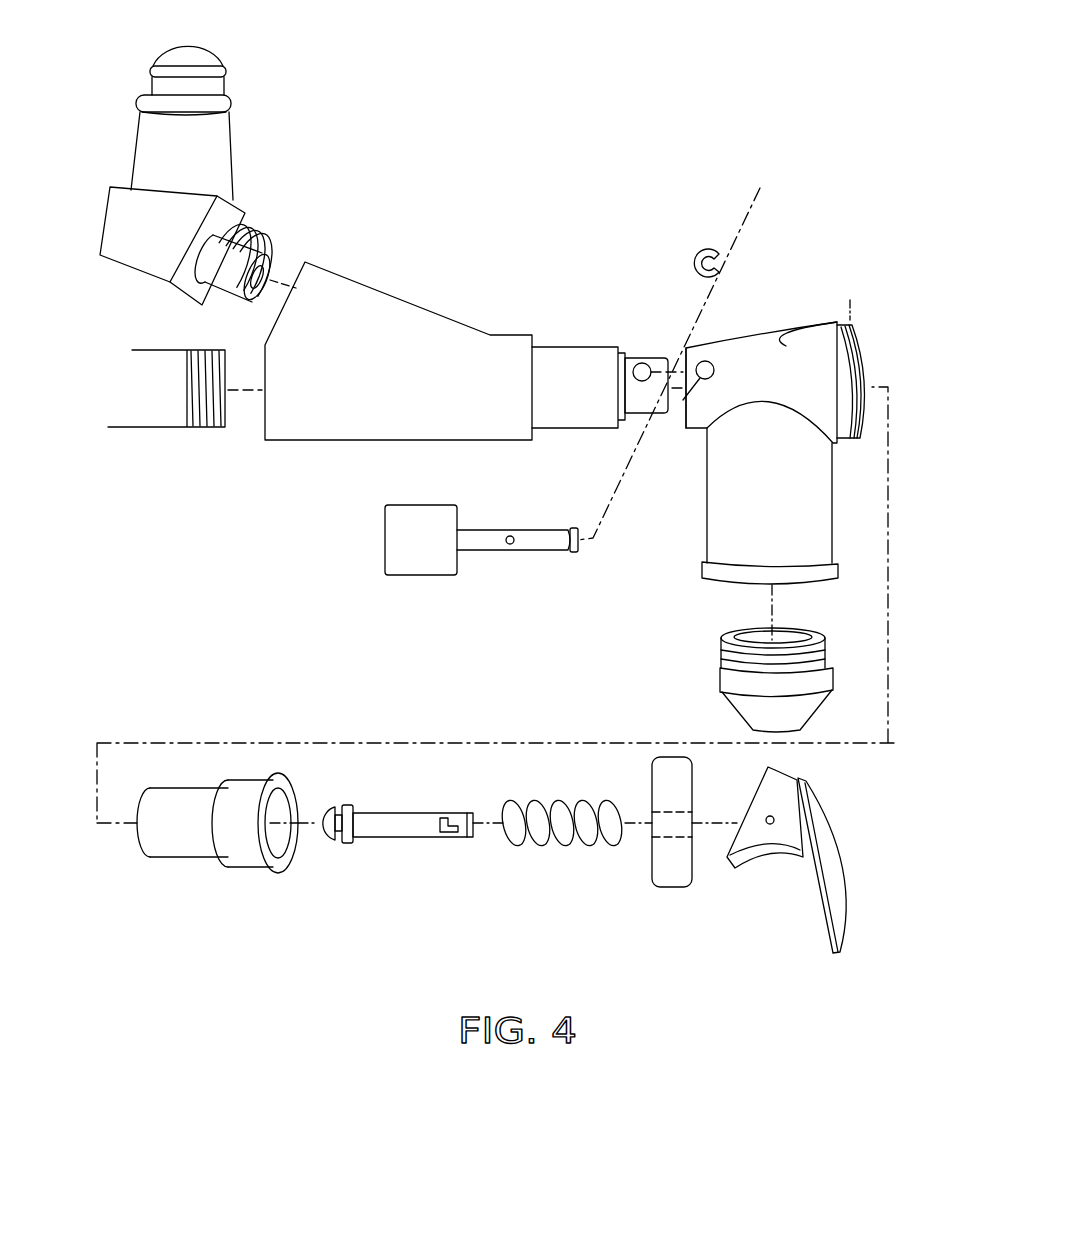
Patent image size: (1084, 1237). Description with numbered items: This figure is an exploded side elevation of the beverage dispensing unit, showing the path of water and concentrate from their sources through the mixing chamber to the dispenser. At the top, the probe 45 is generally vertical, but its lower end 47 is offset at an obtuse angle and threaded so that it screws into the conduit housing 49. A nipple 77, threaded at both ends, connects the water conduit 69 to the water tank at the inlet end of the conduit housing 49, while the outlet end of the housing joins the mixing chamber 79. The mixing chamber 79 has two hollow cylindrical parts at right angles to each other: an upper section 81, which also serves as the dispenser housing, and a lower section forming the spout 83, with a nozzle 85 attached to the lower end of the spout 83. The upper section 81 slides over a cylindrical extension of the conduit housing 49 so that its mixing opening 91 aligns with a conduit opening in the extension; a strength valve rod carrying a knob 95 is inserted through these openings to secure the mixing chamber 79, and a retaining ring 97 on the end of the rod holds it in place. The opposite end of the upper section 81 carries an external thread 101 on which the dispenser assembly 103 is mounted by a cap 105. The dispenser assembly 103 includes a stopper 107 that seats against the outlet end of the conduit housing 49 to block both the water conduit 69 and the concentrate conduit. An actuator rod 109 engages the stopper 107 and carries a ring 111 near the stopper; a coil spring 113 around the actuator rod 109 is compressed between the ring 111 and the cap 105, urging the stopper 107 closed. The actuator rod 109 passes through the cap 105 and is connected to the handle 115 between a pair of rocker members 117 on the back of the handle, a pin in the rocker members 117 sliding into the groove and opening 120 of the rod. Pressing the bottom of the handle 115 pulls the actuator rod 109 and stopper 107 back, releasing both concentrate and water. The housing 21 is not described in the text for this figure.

The probe 45 is at (222, 150).
The lower end 47 is at (158, 272).
The conduit housing 49 is at (338, 288).
The nipple 77 is at (163, 413).
The water conduit 69 is at (643, 364).
The retaining ring 97 is at (720, 249).
The upper section 81 is at (693, 347).
The mixing chamber 79 is at (730, 338).
The housing 21 is at (807, 331).
The mixing opening 91 is at (712, 368).
The external thread 101 is at (868, 350).
The spout 83 is at (717, 473).
The nozzle 85 is at (737, 684).
The knob 95 is at (415, 568).
The dispenser assembly 103 is at (437, 772).
The stopper 107 is at (200, 849).
The ring 111 is at (350, 845).
The actuator rod 109 is at (383, 829).
The groove and opening 120 is at (443, 838).
The coil spring 113 is at (550, 845).
The cap 105 is at (660, 878).
The rocker members 117 is at (777, 783).
The handle 115 is at (840, 928).